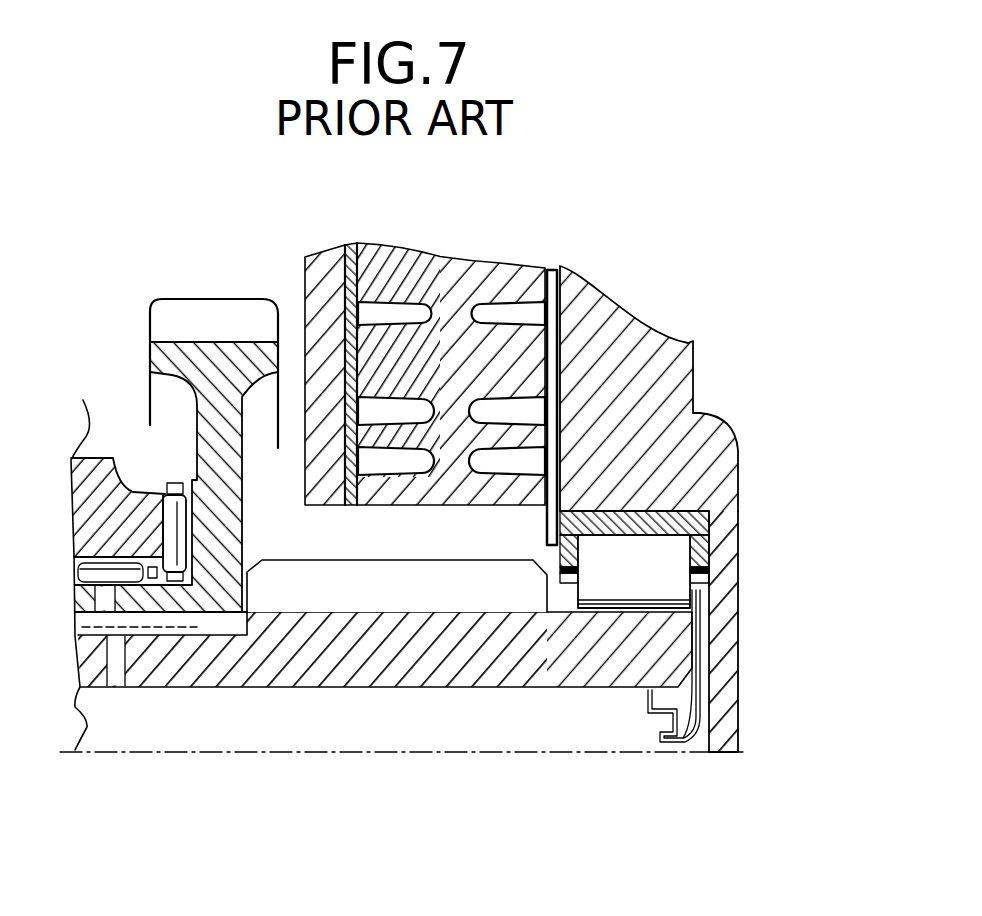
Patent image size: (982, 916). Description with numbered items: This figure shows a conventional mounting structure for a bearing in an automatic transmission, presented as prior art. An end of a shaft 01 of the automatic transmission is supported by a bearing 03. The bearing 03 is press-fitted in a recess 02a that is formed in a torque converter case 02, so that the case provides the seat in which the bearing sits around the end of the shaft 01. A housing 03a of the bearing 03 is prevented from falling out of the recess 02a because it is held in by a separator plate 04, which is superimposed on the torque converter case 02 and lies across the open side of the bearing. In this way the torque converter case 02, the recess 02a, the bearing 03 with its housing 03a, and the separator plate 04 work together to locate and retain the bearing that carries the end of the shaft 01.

The shaft 01 is at (453, 680).
The torque converter case 02 is at (618, 302).
The recess 02a is at (738, 535).
The bearing 03 is at (663, 504).
The housing 03a is at (615, 522).
The separator plate 04 is at (547, 530).